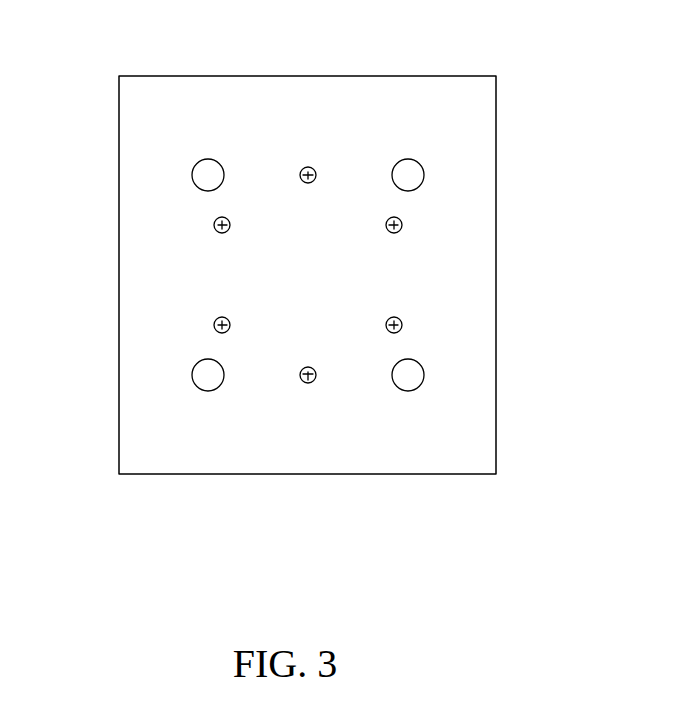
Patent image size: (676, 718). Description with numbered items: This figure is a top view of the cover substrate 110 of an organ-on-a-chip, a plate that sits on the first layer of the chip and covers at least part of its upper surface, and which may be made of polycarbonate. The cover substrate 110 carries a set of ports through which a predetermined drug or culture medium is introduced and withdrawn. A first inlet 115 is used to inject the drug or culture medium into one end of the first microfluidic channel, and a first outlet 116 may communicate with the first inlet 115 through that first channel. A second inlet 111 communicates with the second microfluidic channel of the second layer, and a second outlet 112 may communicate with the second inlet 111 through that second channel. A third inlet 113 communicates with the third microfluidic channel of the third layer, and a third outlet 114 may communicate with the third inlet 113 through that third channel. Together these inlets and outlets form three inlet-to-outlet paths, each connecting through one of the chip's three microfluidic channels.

The cover substrate 110 is at (444, 76).
The second inlet 111 is at (303, 167).
The second outlet 112 is at (303, 383).
The third inlet 113 is at (402, 322).
The third outlet 114 is at (213, 223).
The first inlet 115 is at (402, 222).
The first outlet 116 is at (213, 323).